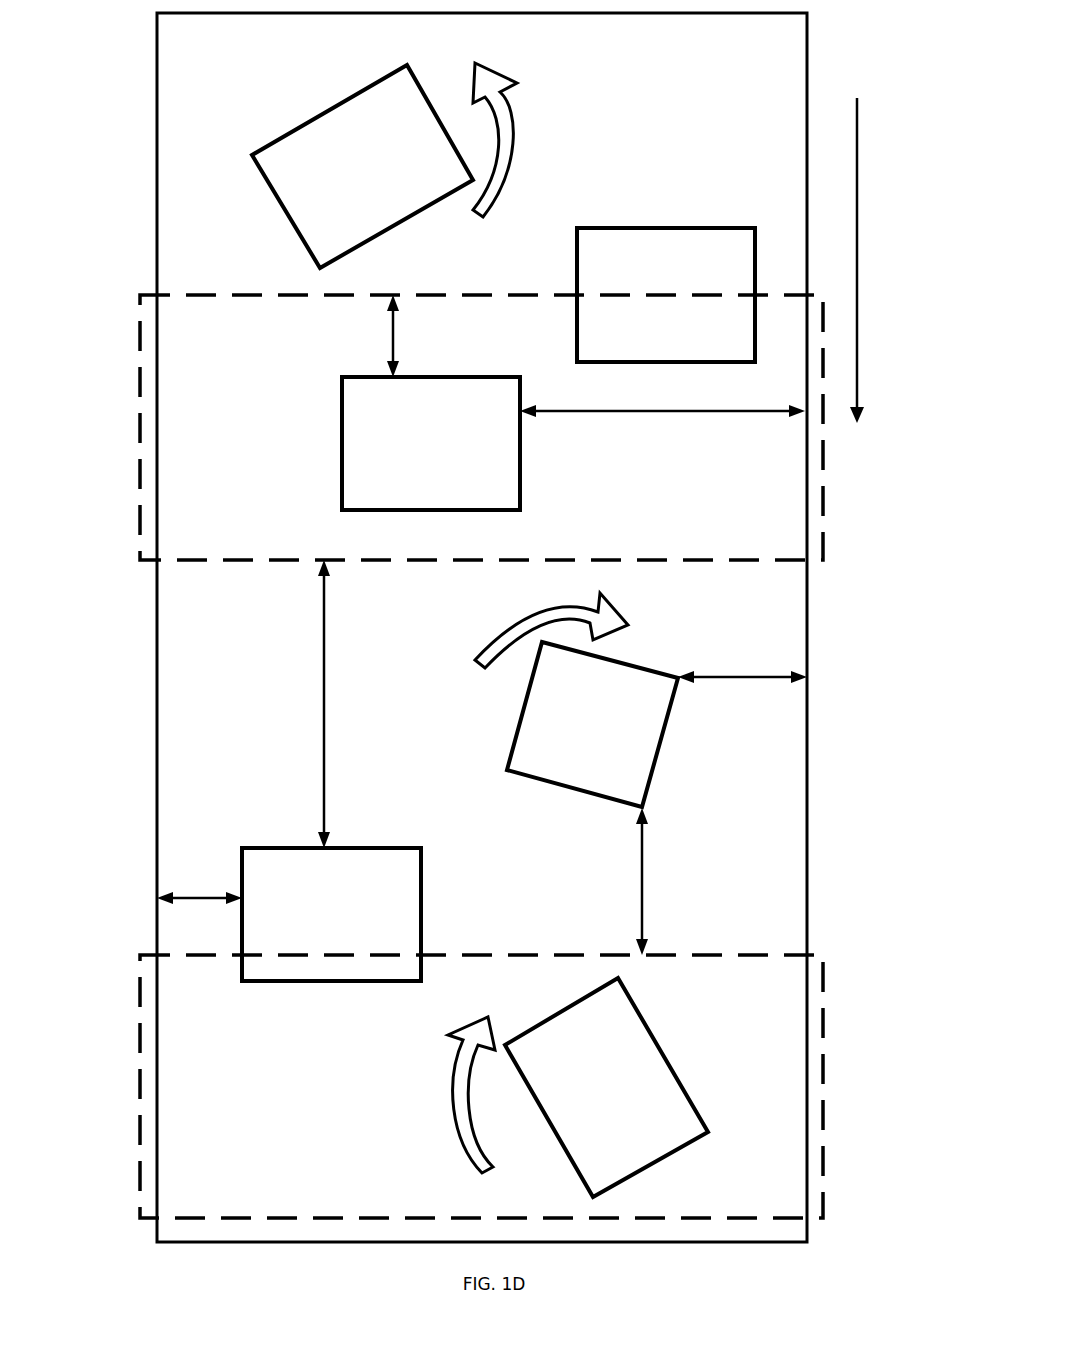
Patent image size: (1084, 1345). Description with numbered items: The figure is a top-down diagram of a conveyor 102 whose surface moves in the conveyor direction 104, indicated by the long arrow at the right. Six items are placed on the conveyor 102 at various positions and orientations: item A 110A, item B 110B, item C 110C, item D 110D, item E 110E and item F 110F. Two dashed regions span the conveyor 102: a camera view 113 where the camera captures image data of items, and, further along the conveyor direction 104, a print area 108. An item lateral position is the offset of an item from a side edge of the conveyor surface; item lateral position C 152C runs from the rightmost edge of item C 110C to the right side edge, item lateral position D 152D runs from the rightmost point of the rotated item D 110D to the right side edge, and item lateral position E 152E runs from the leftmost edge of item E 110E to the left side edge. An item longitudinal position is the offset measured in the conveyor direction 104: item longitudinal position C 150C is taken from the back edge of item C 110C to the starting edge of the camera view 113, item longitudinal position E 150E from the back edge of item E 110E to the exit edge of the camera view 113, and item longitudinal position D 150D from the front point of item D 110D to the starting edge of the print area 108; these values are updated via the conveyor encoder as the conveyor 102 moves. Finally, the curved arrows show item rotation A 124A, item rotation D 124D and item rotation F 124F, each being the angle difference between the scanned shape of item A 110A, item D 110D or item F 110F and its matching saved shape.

The conveyor 102 is at (482, 627).
The conveyor direction 104 is at (904, 260).
The print area 108 is at (140, 1115).
The camera view 113 is at (140, 453).
The item A 110A is at (362, 166).
The item B 110B is at (666, 295).
The item C 110C is at (431, 443).
The item D 110D is at (592, 724).
The item E 110E is at (331, 914).
The item F 110F is at (606, 1087).
The item rotation A 124A is at (512, 145).
The item rotation D 124D is at (477, 660).
The item rotation F 124F is at (455, 1100).
The item longitudinal position C 150C is at (392, 342).
The item longitudinal position D 150D is at (640, 872).
The item longitudinal position E 150E is at (322, 675).
The item lateral position C 152C is at (647, 413).
The item lateral position D 152D is at (735, 680).
The item lateral position E 152E is at (200, 897).